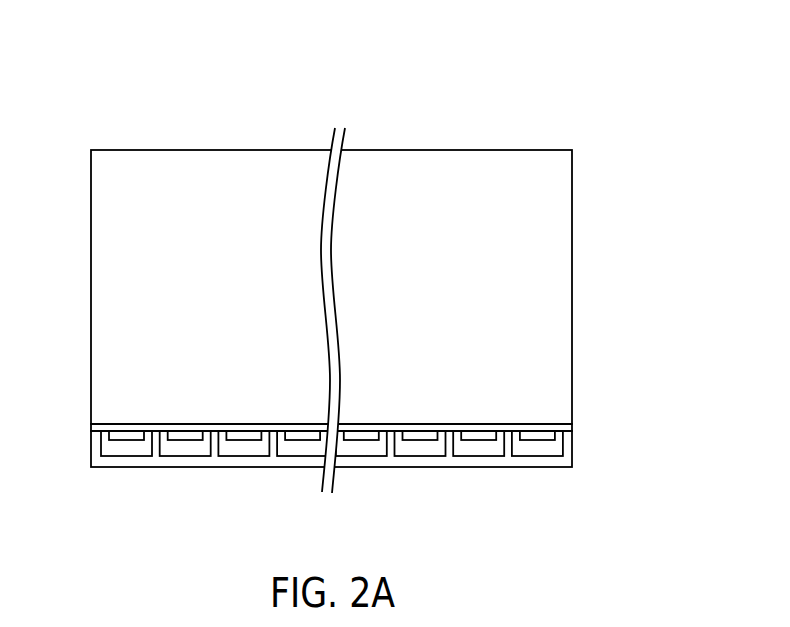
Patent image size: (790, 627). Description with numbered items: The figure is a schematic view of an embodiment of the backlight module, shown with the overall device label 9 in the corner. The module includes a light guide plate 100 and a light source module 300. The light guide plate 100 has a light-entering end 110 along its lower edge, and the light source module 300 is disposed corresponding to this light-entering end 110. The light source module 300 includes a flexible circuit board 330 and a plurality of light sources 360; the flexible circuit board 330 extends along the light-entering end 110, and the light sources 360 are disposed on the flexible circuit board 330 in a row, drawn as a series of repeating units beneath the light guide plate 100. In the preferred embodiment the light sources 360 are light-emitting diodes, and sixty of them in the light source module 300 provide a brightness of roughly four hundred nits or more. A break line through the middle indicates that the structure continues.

The display device 9 is at (62, 44).
The light guide plate 100 is at (555, 223).
The light-entering end 110 is at (566, 425).
The light source module 300 is at (354, 499).
The flexible circuit board 330 is at (567, 447).
The light sources 360 is at (332, 484).